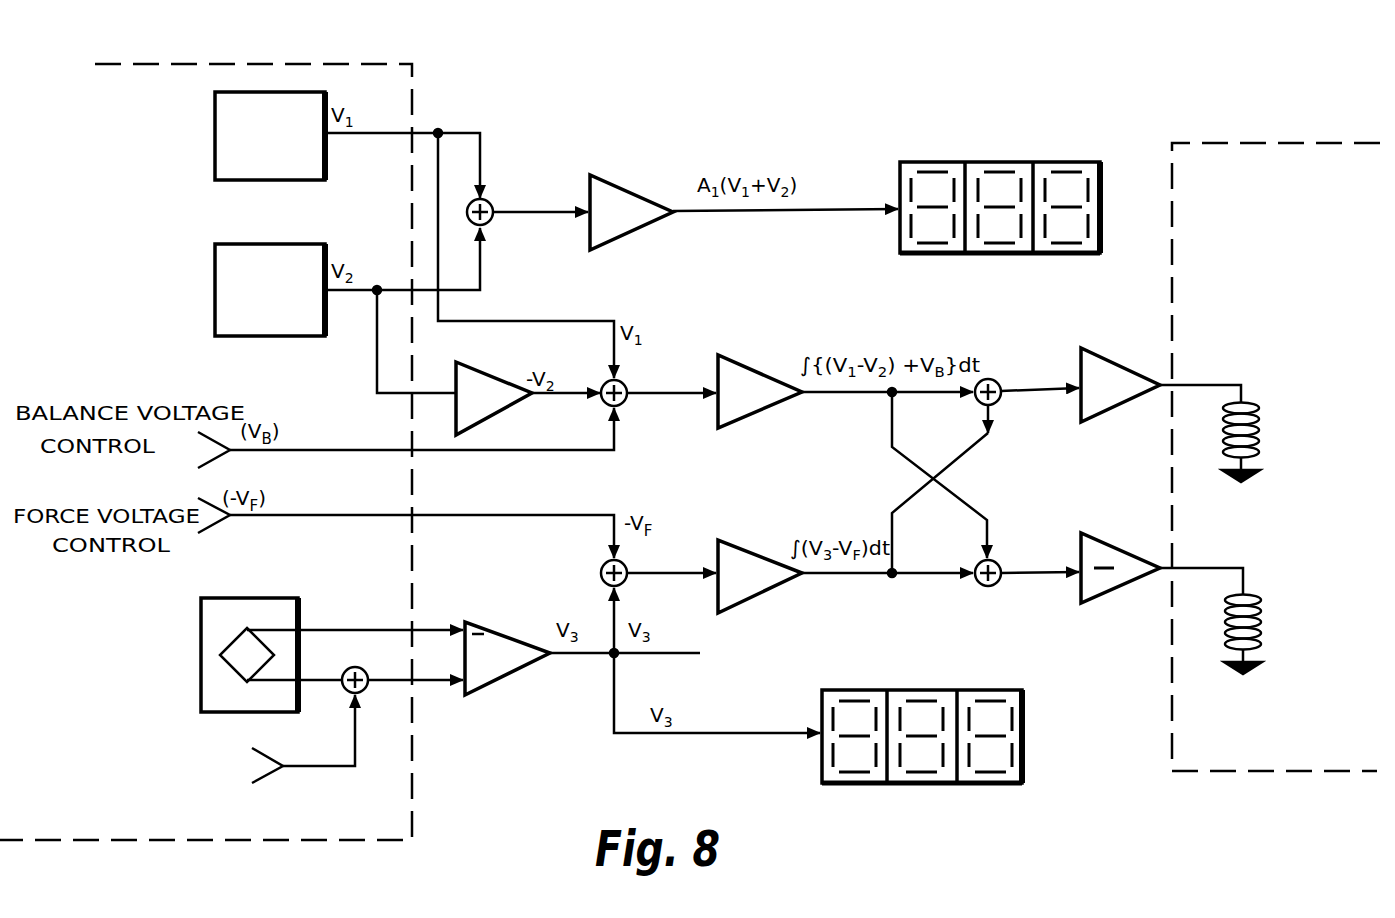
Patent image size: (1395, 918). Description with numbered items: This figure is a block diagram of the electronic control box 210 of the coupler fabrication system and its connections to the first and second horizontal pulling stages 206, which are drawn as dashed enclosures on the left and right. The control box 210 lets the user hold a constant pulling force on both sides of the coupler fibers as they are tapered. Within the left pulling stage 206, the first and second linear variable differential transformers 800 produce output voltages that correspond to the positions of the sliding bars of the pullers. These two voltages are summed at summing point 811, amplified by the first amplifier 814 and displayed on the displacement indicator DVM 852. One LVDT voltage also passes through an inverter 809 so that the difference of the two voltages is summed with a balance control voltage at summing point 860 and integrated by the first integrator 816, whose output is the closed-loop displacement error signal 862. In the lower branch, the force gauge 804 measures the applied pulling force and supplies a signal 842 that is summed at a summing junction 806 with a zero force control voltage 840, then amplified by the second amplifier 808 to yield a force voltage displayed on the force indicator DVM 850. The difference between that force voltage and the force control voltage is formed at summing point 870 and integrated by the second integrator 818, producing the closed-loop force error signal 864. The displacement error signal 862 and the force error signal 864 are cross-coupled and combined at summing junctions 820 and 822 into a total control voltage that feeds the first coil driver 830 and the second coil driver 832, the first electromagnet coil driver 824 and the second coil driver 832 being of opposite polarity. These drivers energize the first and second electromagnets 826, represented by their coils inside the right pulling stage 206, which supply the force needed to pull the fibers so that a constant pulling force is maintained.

The horizontal pulling stage 206 is at (1228, 143).
The electronic control box 210 is at (727, 122).
The linear variable differential transformer 800 is at (283, 182).
The force gauge 804 is at (300, 615).
The summing junction 806 is at (345, 673).
The second amplifier 808 is at (500, 625).
The inverter 809 is at (510, 354).
The summing point 811 is at (492, 203).
The first amplifier 814 is at (640, 188).
The first integrator 816 is at (762, 356).
The second integrator 818 is at (758, 540).
The summing junction 820 is at (997, 380).
The summing junction 822 is at (1002, 565).
The first electromagnet coil driver 824 is at (1113, 405).
The electromagnet 826 is at (1262, 428).
The coil 1 driver 830 is at (1083, 345).
The second electromagnet coil driver 832 is at (1110, 595).
The zero force control voltage 840 is at (312, 768).
The force signal 842 is at (305, 683).
The force indicator DVM 850 is at (1024, 752).
The displacement indicator DVM 852 is at (1055, 160).
The summing point 860 is at (627, 381).
The displacement error signal 862 is at (866, 356).
The force error signal 864 is at (838, 548).
The summing point 870 is at (628, 562).